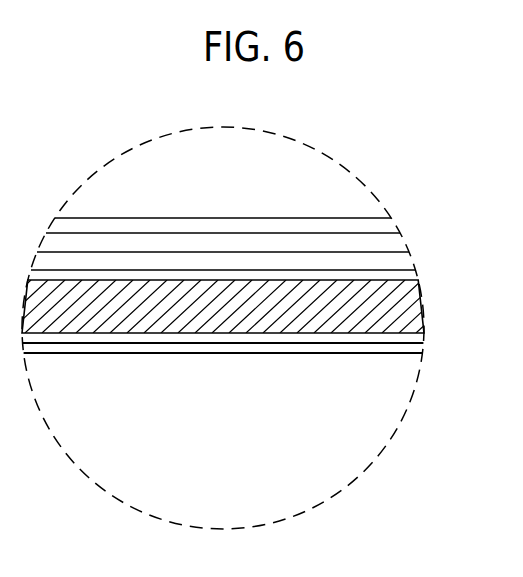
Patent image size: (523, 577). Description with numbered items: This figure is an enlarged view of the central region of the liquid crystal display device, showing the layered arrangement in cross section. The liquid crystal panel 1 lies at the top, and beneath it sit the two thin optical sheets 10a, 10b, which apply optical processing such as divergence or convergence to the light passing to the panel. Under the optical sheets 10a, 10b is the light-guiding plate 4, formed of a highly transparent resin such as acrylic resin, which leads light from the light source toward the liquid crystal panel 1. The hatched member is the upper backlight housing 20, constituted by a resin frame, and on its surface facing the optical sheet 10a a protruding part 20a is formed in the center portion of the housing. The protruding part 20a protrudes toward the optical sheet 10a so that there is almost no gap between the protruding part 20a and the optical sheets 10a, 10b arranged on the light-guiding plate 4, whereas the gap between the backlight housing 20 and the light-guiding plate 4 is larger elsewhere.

The liquid crystal panel 1 is at (262, 200).
The light-guiding plate 4 is at (303, 448).
The upper backlight housing 20 is at (397, 306).
The protruding part 20a is at (255, 318).
The optical sheet 10a is at (420, 336).
The optical sheet 10b is at (427, 350).